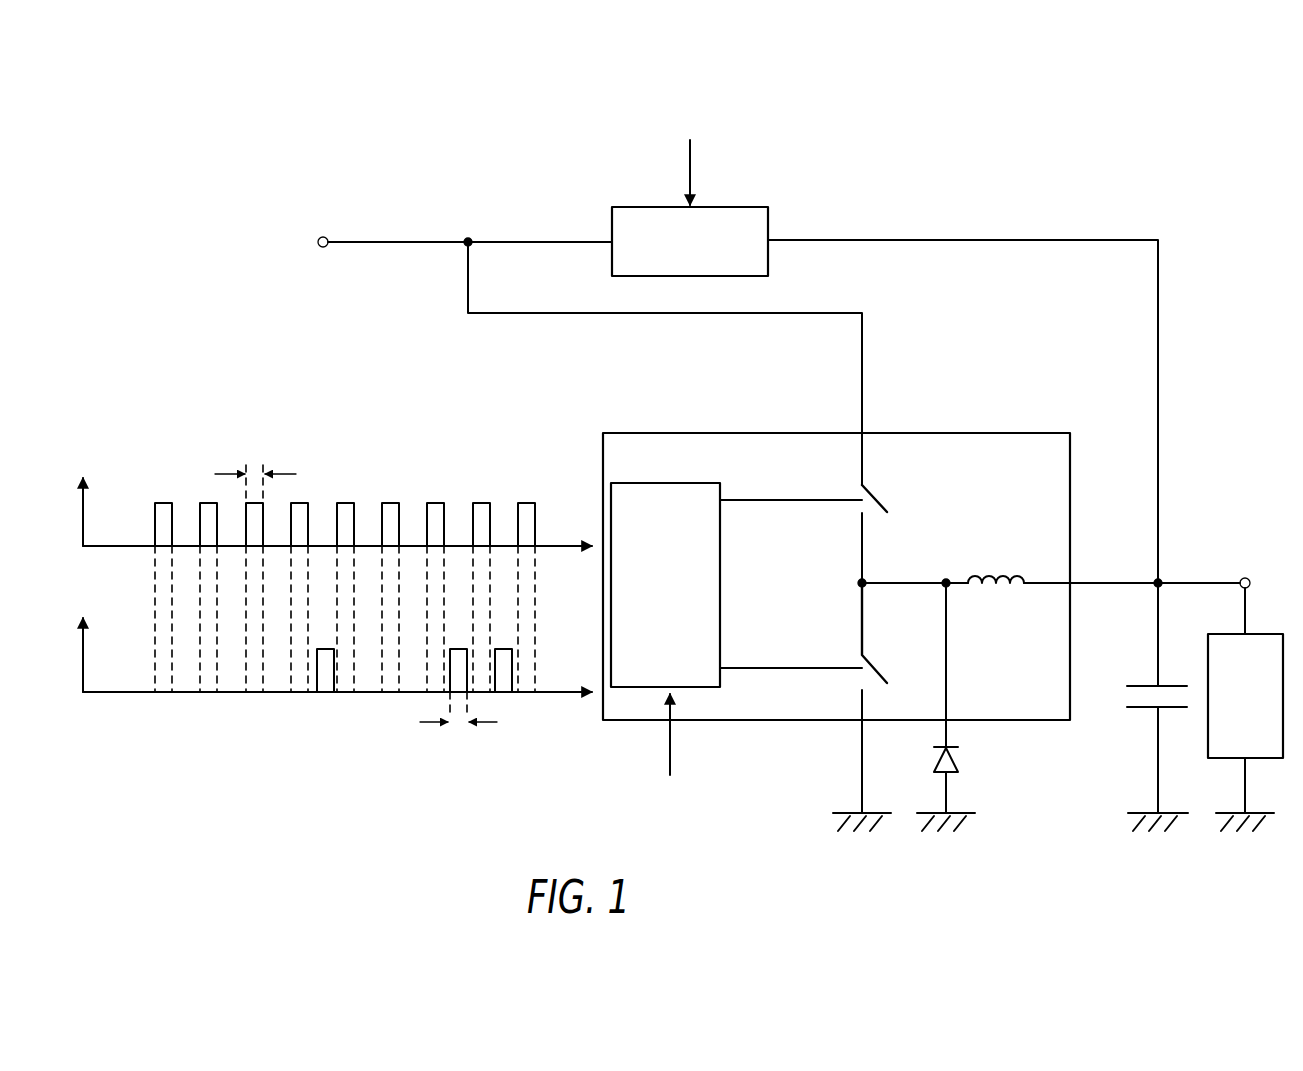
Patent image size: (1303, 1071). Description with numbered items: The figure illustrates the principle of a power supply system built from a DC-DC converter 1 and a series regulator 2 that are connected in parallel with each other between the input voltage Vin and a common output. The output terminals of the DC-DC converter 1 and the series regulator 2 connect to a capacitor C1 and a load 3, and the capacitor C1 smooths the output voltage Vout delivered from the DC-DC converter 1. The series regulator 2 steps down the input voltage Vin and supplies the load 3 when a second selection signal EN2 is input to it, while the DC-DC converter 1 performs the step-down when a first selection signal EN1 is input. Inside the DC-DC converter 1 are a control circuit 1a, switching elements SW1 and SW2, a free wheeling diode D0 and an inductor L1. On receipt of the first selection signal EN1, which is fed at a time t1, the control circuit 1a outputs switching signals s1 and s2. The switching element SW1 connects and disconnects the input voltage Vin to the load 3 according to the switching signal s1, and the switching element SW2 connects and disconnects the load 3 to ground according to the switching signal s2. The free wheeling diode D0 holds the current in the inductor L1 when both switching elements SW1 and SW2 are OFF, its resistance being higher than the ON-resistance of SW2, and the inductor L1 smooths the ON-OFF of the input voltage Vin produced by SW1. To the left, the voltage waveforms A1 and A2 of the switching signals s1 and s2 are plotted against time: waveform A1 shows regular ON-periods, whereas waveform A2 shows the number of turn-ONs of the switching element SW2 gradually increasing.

The DC-DC converter 1 is at (653, 431).
The control circuit 1a is at (720, 568).
The series regulator 2 is at (743, 205).
The load 3 is at (1263, 632).
The first selection signal EN1 is at (662, 741).
The second selection signal EN2 is at (688, 159).
The switching element SW1 is at (873, 496).
The switching element SW2 is at (873, 672).
The switching signal s1 is at (791, 486).
The switching signal s2 is at (791, 654).
The inductor L1 is at (992, 570).
The free wheeling diode D0 is at (955, 759).
The capacitor C1 is at (1142, 710).
The input voltage Vin is at (327, 226).
The output voltage Vout is at (1237, 567).
The voltage waveform A1 is at (347, 430).
The voltage waveform A2 is at (312, 685).
The time t1 is at (154, 711).